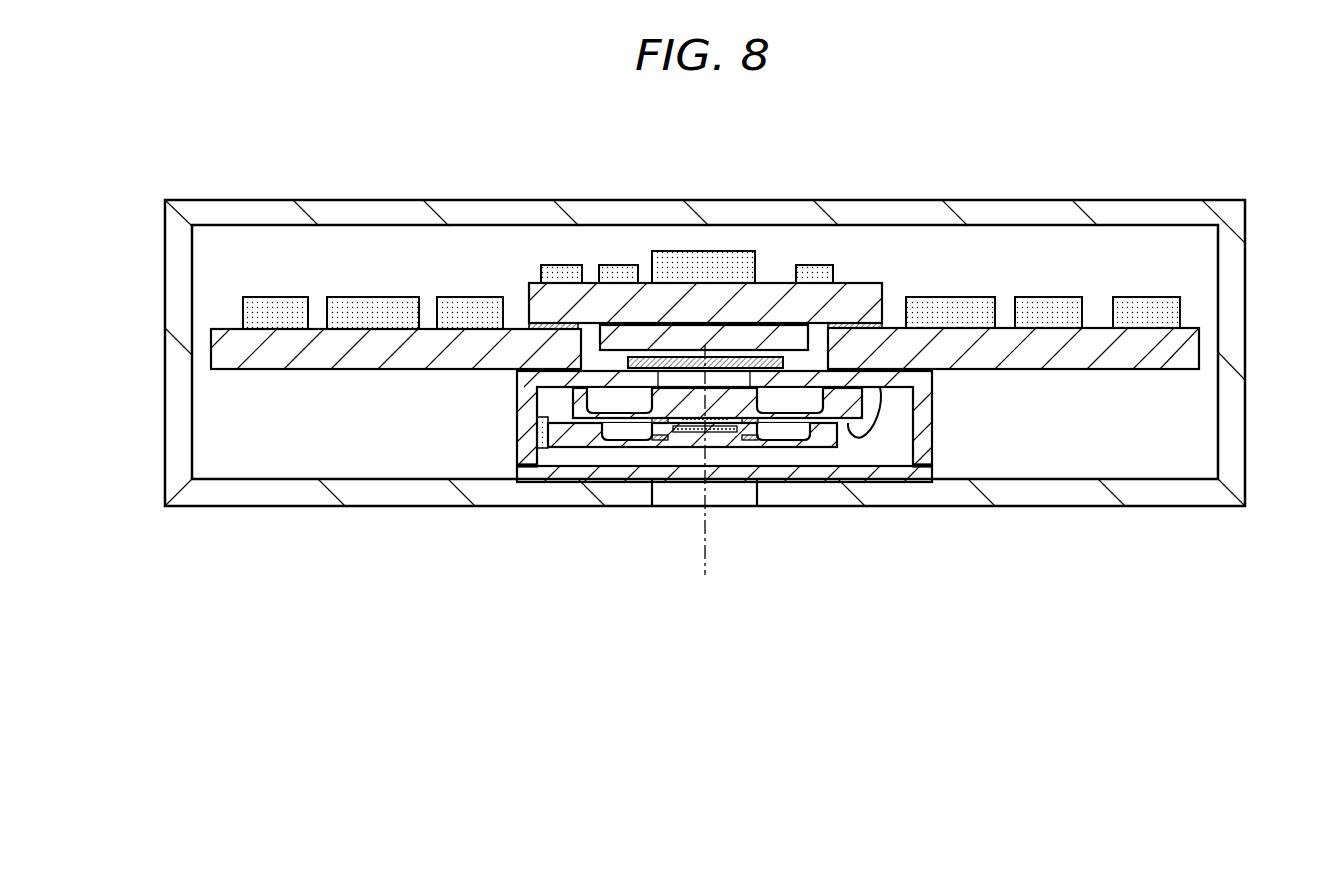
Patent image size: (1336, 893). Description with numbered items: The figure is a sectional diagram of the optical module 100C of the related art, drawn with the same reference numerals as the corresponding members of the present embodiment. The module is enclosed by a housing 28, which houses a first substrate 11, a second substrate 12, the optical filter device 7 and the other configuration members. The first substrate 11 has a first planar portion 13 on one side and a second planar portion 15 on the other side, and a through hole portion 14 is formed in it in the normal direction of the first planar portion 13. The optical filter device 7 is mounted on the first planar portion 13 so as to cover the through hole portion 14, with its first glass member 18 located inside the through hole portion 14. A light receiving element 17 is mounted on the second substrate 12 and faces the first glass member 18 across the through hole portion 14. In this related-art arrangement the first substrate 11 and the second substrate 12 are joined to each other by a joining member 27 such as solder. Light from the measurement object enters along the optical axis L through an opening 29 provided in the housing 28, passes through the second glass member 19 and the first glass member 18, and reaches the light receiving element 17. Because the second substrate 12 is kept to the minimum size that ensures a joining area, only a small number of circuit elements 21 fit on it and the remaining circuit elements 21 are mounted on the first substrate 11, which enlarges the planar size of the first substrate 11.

The optical module 100C is at (736, 335).
The optical filter device 7 is at (673, 426).
The first substrate 11 is at (338, 351).
The second substrate 12 is at (529, 297).
The first planar portion 13 is at (214, 369).
The through hole portion 14 is at (818, 355).
The second planar portion 15 is at (214, 329).
The light receiving element 17 is at (607, 337).
The first glass member 18 is at (626, 357).
The second glass member 19 is at (520, 469).
The circuit element 21 is at (740, 258).
The joining member 27 is at (880, 325).
The housing 28 is at (476, 487).
The opening 29 is at (668, 490).
The optical axis L is at (707, 545).